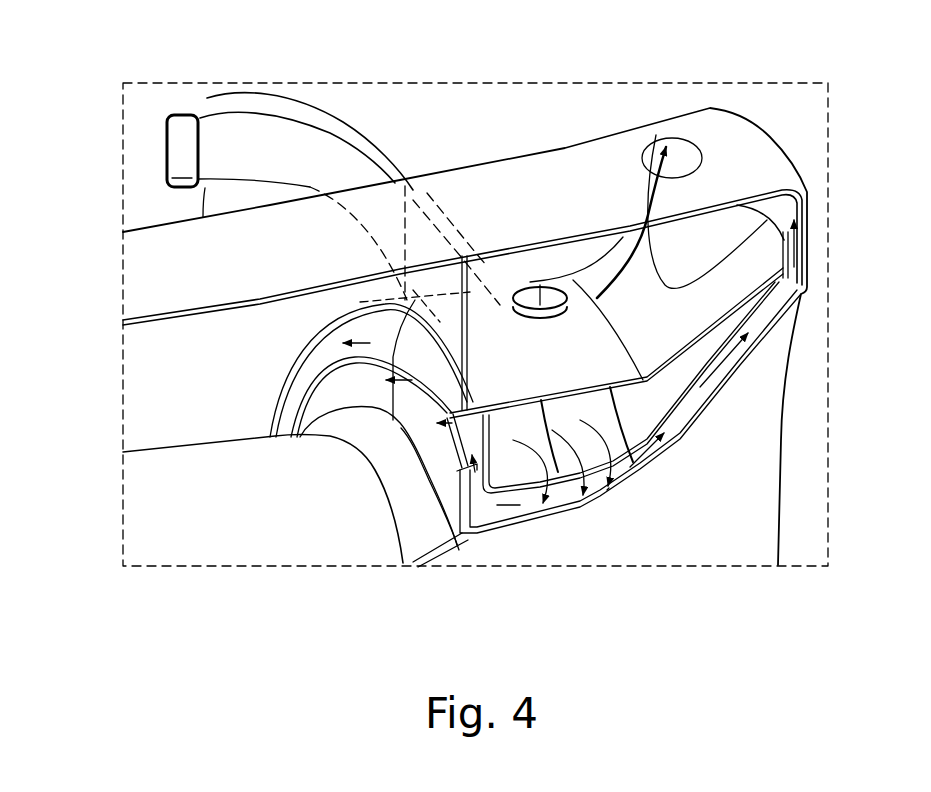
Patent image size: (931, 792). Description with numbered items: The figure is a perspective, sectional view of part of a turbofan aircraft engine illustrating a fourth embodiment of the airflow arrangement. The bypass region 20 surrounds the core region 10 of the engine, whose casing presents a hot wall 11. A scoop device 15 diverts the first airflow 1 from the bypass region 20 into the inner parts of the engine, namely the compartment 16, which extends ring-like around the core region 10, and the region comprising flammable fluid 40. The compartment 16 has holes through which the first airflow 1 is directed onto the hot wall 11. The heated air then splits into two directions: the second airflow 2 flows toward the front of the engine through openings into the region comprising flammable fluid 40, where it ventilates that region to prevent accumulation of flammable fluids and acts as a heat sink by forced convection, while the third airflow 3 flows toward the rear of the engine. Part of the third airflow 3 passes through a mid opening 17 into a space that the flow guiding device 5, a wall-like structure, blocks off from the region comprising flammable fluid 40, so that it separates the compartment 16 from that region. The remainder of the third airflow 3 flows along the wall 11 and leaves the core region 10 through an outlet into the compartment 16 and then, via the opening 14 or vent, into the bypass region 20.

The first airflow 1 is at (156, 160).
The second airflow 2 is at (515, 515).
The third airflow 3 is at (656, 135).
The flow guiding device 5 is at (393, 420).
The core region 10 is at (533, 609).
The hot wall 11 is at (620, 503).
The opening 14 is at (690, 153).
The scoop device 15 is at (380, 155).
The compartment 16 is at (617, 364).
The mid opening 17 is at (557, 225).
The bypass region 20 is at (161, 117).
The region comprising flammable fluid 40 is at (382, 449).